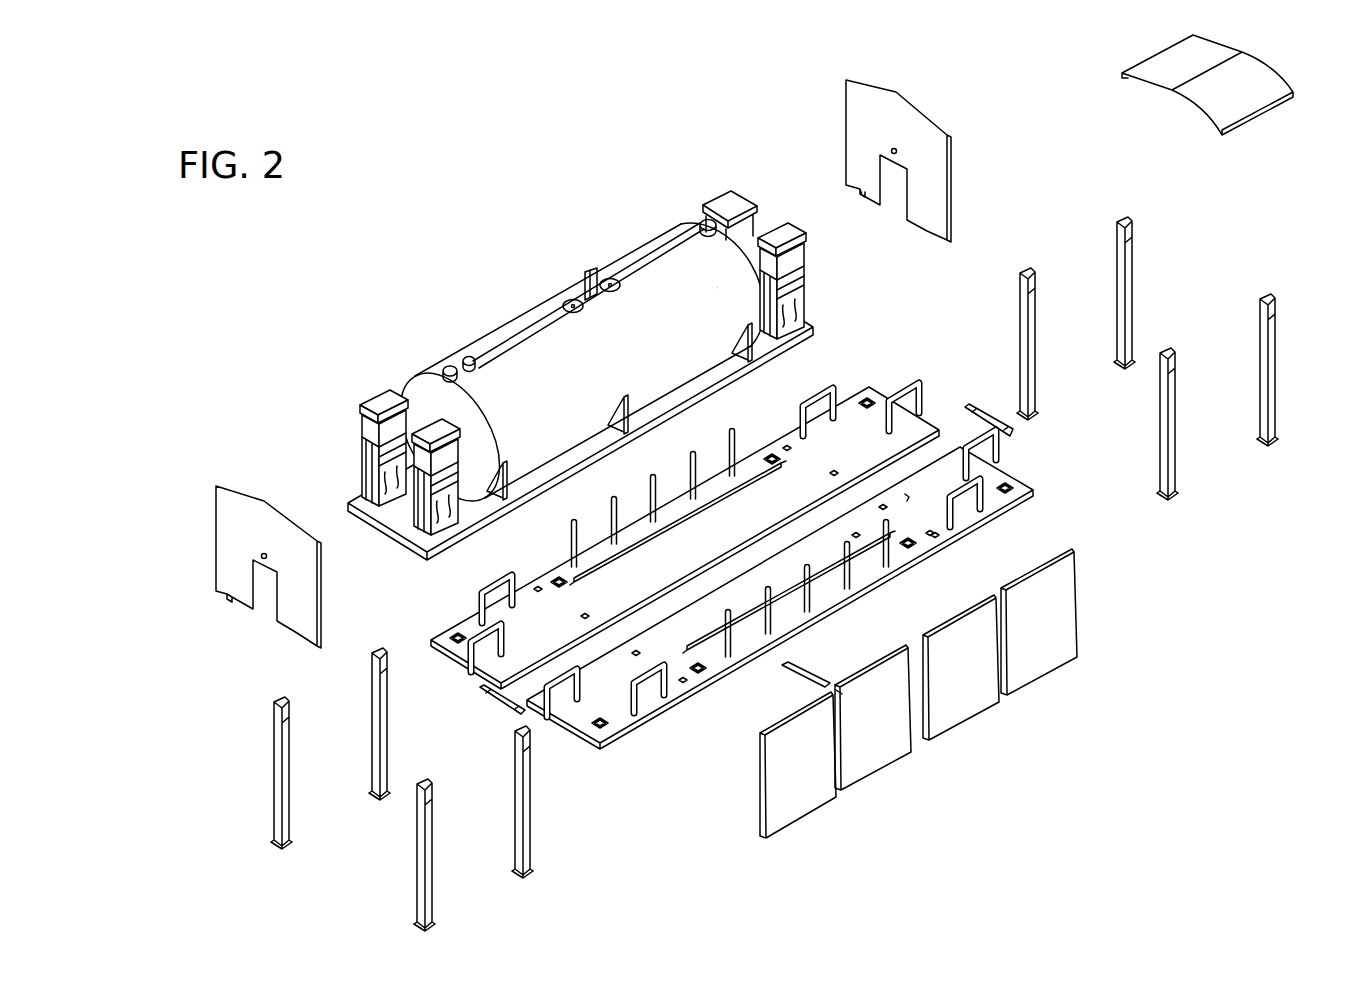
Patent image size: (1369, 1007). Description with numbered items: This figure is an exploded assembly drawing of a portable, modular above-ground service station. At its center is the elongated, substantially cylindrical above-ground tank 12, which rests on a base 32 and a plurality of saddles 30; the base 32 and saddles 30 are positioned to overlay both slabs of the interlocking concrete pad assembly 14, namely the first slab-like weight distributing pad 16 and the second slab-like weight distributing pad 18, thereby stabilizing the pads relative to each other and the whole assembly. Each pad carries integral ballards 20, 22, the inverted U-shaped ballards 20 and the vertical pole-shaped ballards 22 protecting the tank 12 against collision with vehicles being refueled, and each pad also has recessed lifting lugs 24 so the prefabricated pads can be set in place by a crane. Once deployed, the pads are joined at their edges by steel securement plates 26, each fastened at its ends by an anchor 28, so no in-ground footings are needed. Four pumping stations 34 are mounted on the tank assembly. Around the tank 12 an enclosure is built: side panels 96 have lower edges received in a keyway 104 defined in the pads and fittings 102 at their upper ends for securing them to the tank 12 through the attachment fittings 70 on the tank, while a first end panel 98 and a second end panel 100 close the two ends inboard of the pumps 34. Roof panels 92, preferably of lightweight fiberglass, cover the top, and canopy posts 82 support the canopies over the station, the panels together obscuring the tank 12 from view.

The above-ground tank 12 is at (529, 302).
The interlocking concrete pad assembly 14 is at (1066, 487).
The first slab-like weight distributing pad 16 is at (872, 389).
The second slab-like weight distributing pad 18 is at (615, 723).
The ballard 20 is at (484, 572).
The ballard 22 is at (648, 488).
The lifting lug 24 is at (811, 439).
The steel securement plate 26 is at (505, 703).
The anchor 28 is at (457, 711).
The saddle 30 is at (626, 420).
The base 32 is at (397, 518).
The pumping station 34 is at (373, 403).
The fitting 70 is at (675, 295).
The canopy post 82 is at (1130, 276).
The roof panel 92 is at (1235, 97).
The side panel 96 is at (790, 793).
The first end panel 98 is at (237, 569).
The second end panel 100 is at (868, 103).
The fitting 102 is at (838, 686).
The keyway 104 is at (824, 586).